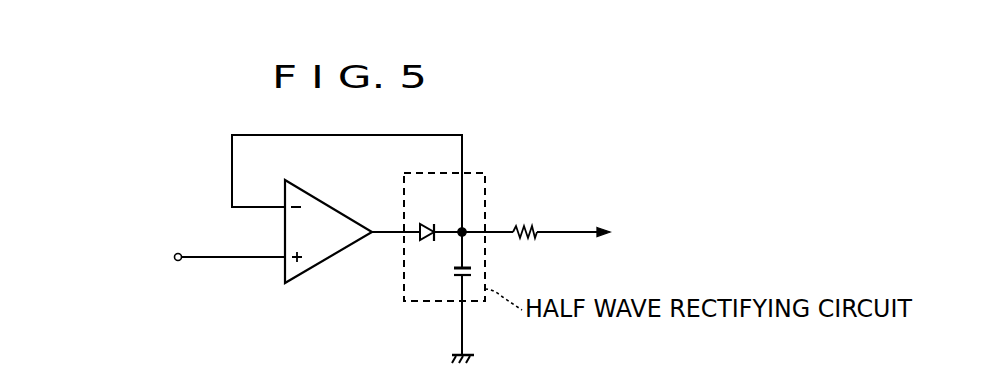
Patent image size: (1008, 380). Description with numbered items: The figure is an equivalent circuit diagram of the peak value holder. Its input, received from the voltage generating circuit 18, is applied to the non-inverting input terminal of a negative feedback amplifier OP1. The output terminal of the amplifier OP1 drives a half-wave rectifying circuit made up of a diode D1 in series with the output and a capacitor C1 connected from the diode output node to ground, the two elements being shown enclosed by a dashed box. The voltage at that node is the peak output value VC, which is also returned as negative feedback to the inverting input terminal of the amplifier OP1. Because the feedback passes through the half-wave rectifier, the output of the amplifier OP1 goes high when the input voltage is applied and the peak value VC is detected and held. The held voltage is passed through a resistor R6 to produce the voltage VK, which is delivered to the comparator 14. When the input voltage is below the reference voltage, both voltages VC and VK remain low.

The negative feedback amplifier OP1 is at (318, 260).
The diode D1 is at (428, 216).
The capacitor C1 is at (449, 293).
The resistor R6 is at (524, 247).
The peak output value VC is at (464, 228).
The voltage VK is at (572, 230).
The comparator 14 is at (735, 230).
The voltage generating circuit 18 is at (169, 304).